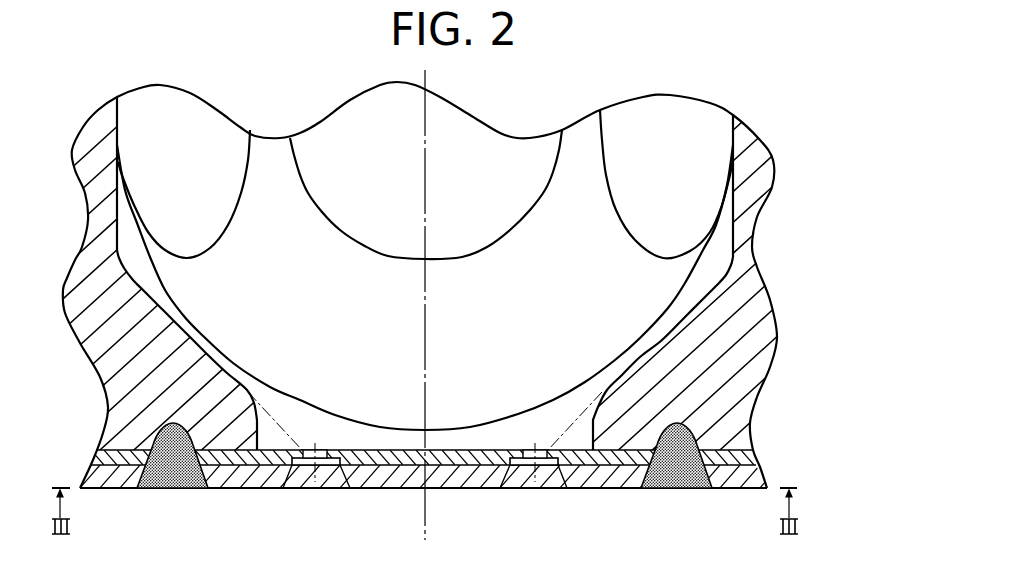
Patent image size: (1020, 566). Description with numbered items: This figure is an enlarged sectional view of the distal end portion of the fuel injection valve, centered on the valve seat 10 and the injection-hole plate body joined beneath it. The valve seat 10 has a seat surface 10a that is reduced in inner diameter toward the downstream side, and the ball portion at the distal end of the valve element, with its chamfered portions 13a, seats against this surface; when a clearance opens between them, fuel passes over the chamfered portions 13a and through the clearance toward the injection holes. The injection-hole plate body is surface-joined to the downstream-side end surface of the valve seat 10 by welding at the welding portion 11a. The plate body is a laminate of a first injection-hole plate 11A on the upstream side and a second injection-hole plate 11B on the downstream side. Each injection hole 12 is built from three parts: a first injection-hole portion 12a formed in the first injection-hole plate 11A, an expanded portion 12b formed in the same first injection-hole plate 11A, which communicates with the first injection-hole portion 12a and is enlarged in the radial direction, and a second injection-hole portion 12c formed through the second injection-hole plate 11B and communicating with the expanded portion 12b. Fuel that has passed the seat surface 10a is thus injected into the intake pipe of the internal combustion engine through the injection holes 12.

The valve seat 10 is at (740, 285).
The seat surface 10a is at (670, 323).
The chamfered portions 13a is at (697, 158).
The first injection-hole plate 11A is at (753, 452).
The second injection-hole plate 11B is at (757, 478).
The welding portion 11a is at (170, 488).
The injection hole 12 is at (555, 489).
The first injection-hole portion 12a is at (330, 453).
The expanded portion 12b is at (345, 467).
The second injection-hole portion 12c is at (280, 478).